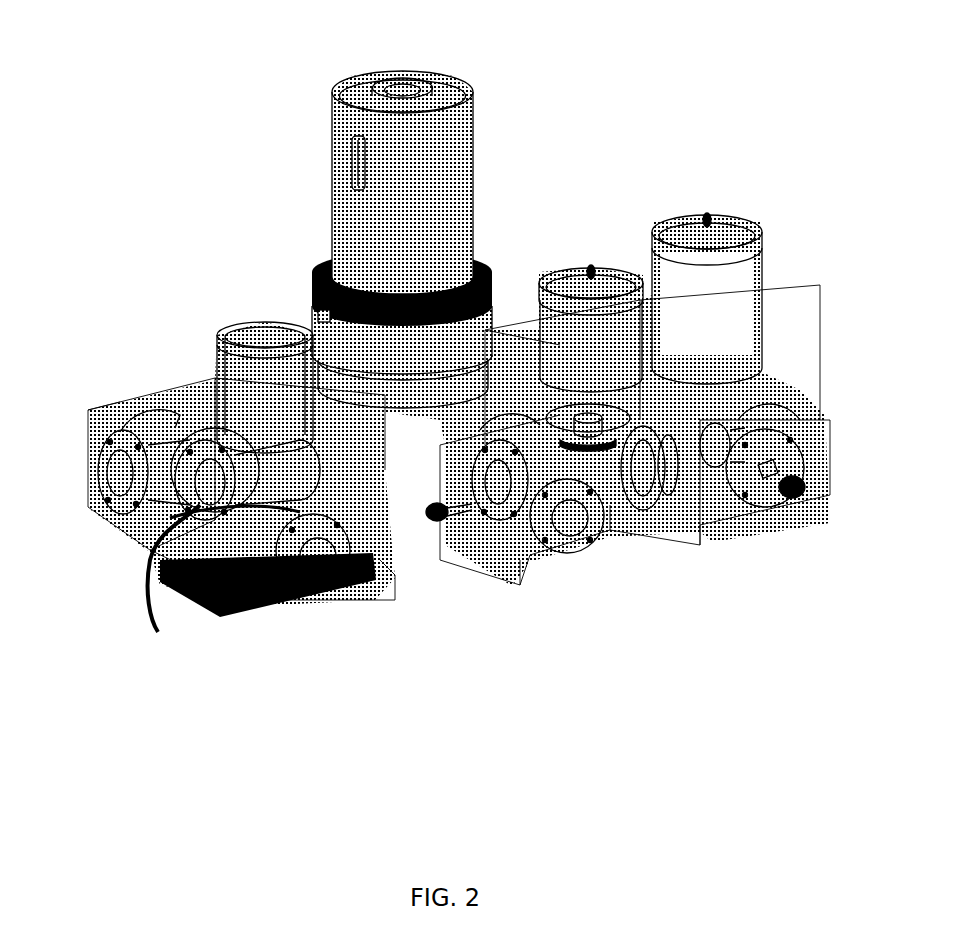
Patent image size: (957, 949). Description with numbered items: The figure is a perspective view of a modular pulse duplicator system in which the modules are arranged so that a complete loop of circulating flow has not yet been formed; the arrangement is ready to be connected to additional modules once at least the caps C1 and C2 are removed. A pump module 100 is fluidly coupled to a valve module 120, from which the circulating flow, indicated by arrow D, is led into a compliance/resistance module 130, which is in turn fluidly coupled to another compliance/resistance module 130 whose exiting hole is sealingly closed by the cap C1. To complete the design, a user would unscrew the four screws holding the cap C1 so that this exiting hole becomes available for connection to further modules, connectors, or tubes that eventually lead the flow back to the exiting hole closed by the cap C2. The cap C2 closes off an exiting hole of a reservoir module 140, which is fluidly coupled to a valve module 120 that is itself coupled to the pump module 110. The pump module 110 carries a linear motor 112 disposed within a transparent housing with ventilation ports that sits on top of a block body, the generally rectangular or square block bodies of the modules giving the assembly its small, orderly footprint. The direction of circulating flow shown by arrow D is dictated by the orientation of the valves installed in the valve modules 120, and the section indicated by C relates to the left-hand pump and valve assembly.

The pump module 100 is at (728, 110).
The pump module 110 is at (314, 320).
The linear motor 112 is at (347, 209).
The valve module 120 is at (105, 410).
The compliance/resistance module 130 is at (778, 392).
The reservoir module 140 is at (268, 613).
The section C is at (115, 480).
The cap C1 is at (567, 517).
The cap C2 is at (313, 557).
The arrow (direction of circulating flow) D is at (625, 239).